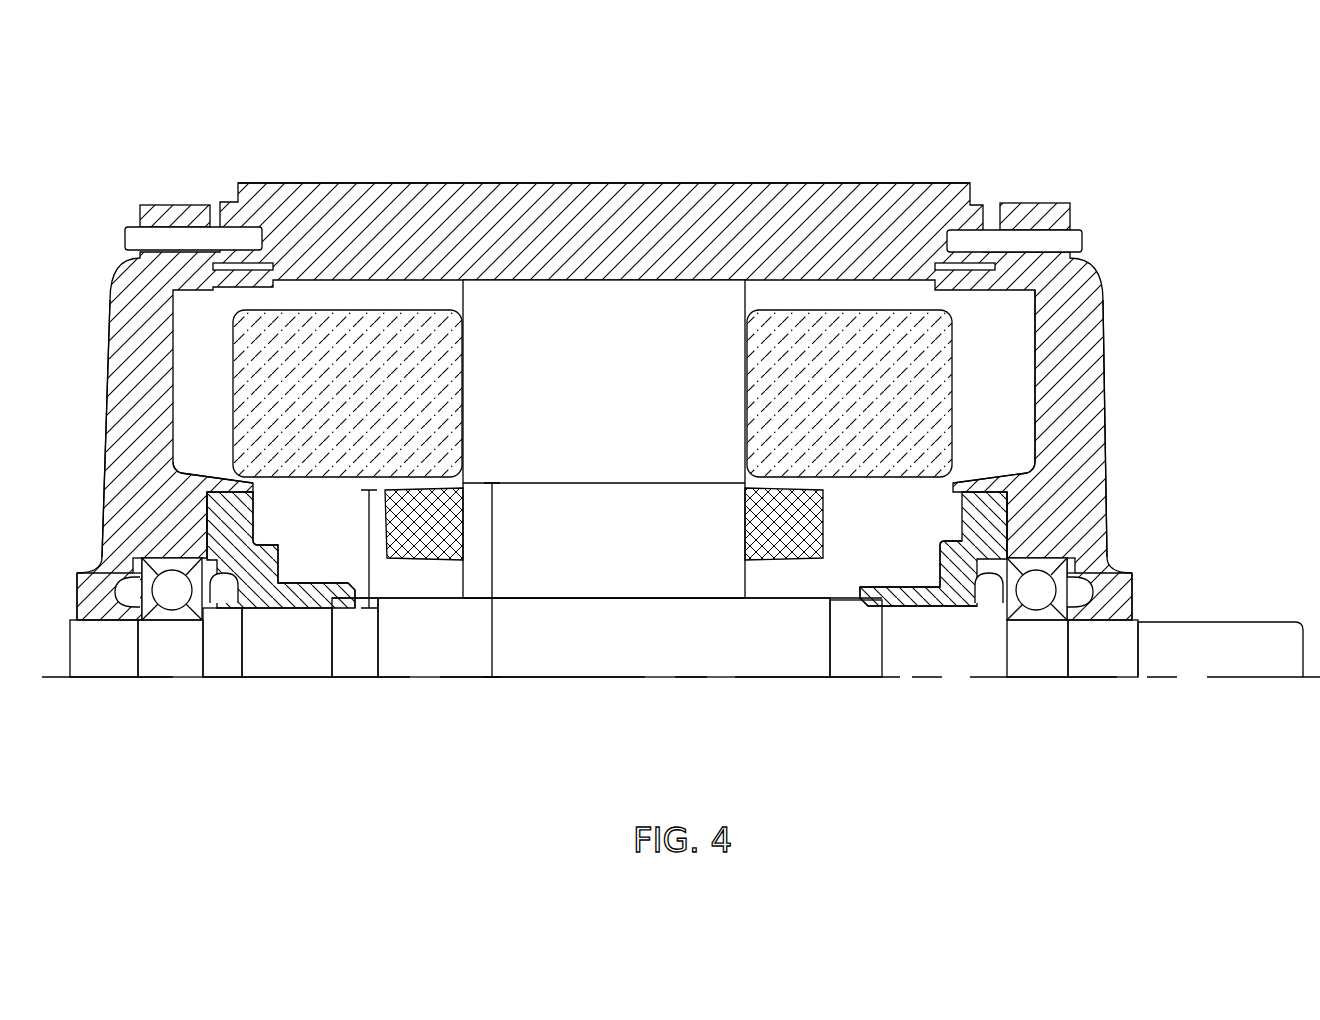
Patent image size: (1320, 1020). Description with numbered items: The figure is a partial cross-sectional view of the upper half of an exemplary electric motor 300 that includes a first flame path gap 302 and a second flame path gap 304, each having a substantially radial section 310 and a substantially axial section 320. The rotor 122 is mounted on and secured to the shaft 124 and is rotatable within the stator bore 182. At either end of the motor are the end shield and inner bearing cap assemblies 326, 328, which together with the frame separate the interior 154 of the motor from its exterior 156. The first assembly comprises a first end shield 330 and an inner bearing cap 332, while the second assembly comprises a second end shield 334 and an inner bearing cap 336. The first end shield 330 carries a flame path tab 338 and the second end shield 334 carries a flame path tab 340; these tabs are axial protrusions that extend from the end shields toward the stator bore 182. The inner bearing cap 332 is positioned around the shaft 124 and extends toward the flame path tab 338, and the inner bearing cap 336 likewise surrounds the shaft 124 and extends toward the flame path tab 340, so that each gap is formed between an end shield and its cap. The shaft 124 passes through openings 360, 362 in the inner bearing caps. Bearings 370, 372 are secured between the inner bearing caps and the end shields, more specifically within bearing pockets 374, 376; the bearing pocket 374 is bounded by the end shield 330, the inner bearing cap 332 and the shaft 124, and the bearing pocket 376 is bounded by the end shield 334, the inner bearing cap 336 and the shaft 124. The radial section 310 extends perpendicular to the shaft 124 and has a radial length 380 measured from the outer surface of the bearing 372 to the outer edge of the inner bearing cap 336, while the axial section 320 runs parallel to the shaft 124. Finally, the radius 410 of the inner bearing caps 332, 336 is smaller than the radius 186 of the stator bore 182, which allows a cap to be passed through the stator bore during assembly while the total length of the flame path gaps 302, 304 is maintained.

The electric motor 300 is at (1080, 100).
The exterior 156 is at (1243, 168).
The end shield and inner bearing cap assembly 326 is at (230, 186).
The end shield and inner bearing cap assembly 328 is at (1088, 186).
The interior 154 is at (1012, 325).
The second end shield 334 is at (1105, 340).
The first end shield 330 is at (103, 420).
The flame path tab 338 is at (187, 473).
The flame path tab 340 is at (988, 478).
The axial section 320 is at (220, 490).
The first flame path gap 302 is at (198, 505).
The second flame path gap 304 is at (1017, 500).
The radial section 310 is at (207, 535).
The inner bearing cap 332 is at (253, 515).
The inner bearing cap 336 is at (960, 520).
The bearing pocket 374 is at (208, 572).
The bearing pocket 376 is at (1062, 590).
The bearing 372 is at (133, 568).
The opening 362 is at (213, 637).
The bearing 370 is at (228, 612).
The radius 410 is at (242, 648).
The radial length 380 is at (372, 578).
The radius 186 is at (496, 638).
The rotor 122 is at (748, 592).
The stator bore 182 is at (889, 568).
The opening 360 is at (985, 618).
The shaft 124 is at (1240, 622).